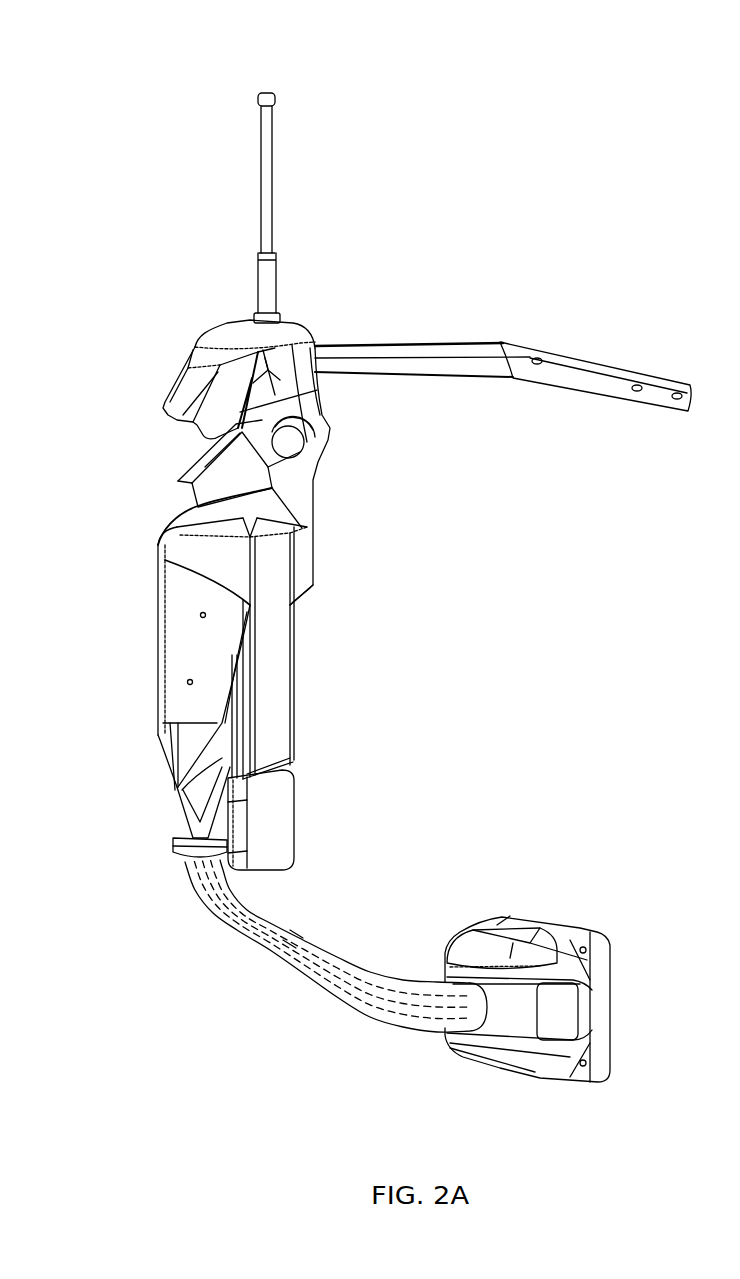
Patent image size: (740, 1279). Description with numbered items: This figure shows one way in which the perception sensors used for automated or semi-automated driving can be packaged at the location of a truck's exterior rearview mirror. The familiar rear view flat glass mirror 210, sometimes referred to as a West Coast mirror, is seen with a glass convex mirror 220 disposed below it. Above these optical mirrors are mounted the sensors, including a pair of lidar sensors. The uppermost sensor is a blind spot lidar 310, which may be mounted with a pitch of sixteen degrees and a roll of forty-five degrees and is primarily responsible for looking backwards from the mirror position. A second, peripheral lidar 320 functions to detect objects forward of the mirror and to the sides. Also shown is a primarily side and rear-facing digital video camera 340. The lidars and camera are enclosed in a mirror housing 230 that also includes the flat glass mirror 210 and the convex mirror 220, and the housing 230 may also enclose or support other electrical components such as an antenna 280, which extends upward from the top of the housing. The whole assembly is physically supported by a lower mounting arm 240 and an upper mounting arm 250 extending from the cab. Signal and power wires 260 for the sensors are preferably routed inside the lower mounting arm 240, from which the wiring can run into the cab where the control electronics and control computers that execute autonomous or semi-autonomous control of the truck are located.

The flat glass mirror 210 is at (283, 672).
The glass convex mirror 220 is at (285, 822).
The mirror housing 230 is at (172, 682).
The lower mounting arm 240 is at (363, 1010).
The upper mounting arm 250 is at (447, 345).
The signal and power wires 260 is at (285, 940).
The antenna 280 is at (273, 168).
The blind spot lidar 310 is at (197, 425).
The peripheral lidar 320 is at (197, 496).
The side and rear-facing digital video camera 340 is at (305, 448).